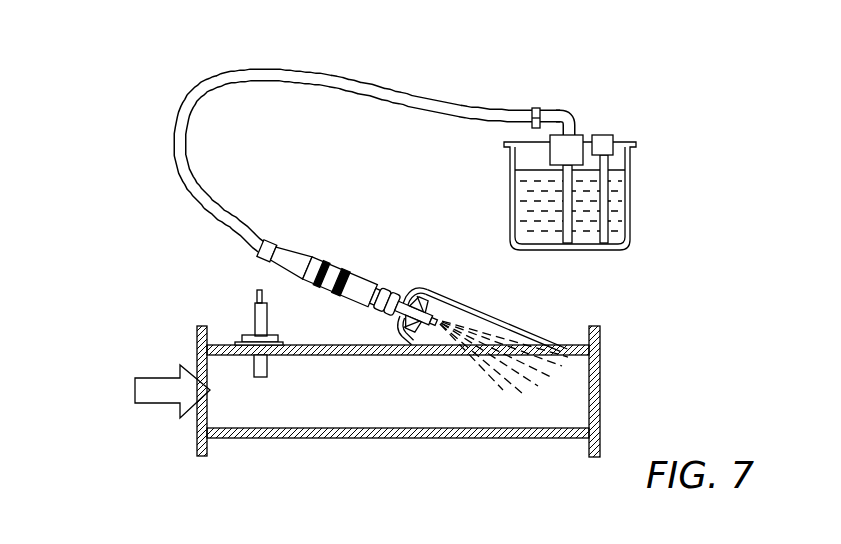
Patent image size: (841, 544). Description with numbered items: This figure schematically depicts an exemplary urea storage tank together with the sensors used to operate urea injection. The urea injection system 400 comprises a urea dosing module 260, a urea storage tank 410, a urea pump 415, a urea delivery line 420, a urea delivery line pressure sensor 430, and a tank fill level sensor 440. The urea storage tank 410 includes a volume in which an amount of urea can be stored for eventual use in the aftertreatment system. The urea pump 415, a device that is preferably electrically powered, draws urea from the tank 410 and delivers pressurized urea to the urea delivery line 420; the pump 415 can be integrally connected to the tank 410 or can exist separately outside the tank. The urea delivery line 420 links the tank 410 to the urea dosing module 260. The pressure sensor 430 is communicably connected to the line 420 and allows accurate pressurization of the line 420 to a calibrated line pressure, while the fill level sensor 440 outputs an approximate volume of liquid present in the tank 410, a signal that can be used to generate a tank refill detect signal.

The urea injection system 400 is at (166, 85).
The urea delivery line 420 is at (173, 172).
The urea delivery line pressure sensor 430 is at (571, 113).
The urea storage tank 410 is at (617, 162).
The urea pump 415 is at (557, 152).
The tank fill level sensor 440 is at (603, 131).
The urea dosing module 260 is at (363, 288).